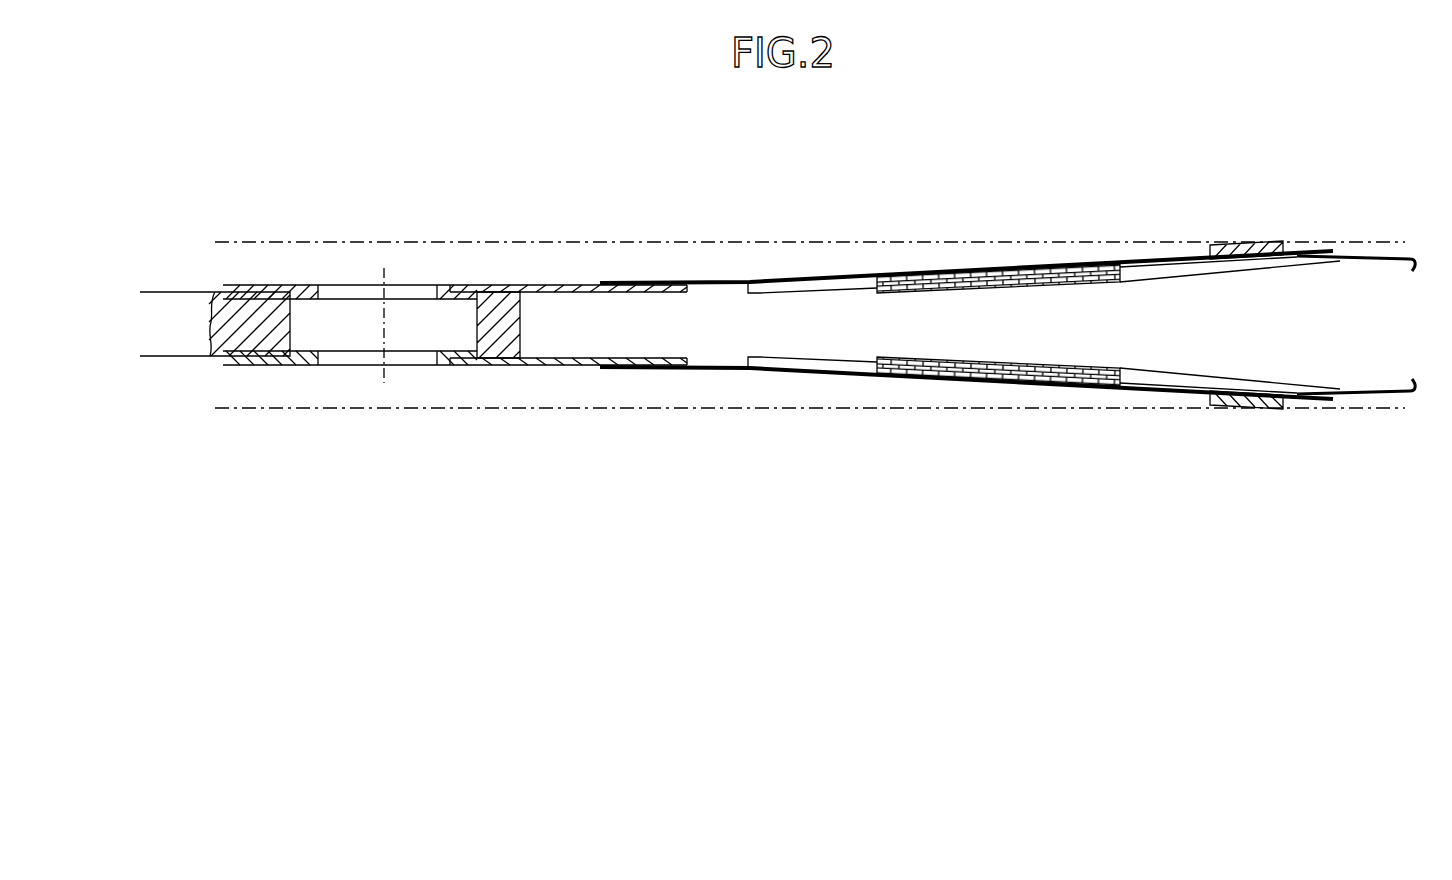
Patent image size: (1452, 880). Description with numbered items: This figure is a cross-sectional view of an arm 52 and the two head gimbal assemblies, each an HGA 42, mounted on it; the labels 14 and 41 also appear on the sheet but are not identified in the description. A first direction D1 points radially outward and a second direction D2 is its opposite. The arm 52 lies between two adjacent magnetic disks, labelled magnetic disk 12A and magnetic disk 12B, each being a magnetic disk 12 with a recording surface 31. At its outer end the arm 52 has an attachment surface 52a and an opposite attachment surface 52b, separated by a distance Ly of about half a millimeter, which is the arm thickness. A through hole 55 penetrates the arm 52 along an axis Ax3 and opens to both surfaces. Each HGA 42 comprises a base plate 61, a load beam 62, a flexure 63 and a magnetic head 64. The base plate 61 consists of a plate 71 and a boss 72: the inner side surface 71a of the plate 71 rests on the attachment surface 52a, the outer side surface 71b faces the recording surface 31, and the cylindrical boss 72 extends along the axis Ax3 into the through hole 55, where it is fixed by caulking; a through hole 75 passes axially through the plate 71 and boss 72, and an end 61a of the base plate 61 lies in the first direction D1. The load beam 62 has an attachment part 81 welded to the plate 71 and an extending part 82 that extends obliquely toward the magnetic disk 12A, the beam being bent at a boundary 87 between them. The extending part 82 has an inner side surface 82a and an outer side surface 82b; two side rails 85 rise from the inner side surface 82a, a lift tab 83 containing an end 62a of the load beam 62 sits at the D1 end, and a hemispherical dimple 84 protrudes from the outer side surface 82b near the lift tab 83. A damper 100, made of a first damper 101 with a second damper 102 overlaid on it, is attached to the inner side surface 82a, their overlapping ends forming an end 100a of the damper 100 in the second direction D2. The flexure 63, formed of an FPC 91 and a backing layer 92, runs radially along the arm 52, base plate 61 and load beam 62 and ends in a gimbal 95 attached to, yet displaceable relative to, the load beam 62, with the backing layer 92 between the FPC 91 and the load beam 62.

The treatment tool 14 is at (231, 144).
The proximal member 41 is at (247, 306).
The arm 52 is at (215, 264).
The attachment surface 52a is at (214, 295).
The attachment surface 52b is at (214, 355).
The through hole 55 is at (351, 316).
The outer side surface 71b is at (280, 284).
The through hole 75 is at (404, 285).
The boss 72 is at (462, 288).
The magnetic disk 12 is at (810, 326).
The magnetic disk 12A is at (487, 240).
The magnetic disk 12B is at (487, 410).
The recording surface 31 is at (810, 326).
The base plate 61 is at (455, 327).
The plate 71 is at (528, 284).
The attachment part 81 is at (622, 285).
The end of base plate 61a is at (706, 288).
The inner side surface 71a is at (712, 283).
The boundary 87 is at (758, 290).
The outer side surface 82b is at (780, 288).
The extending part 82 is at (812, 327).
The inner side surface 82a is at (837, 288).
The end of damper 100a is at (886, 292).
The first damper 101 is at (906, 270).
The damper 100 is at (998, 327).
The second damper 102 is at (1007, 292).
The backing layer 92 is at (1068, 265).
The FPC 91 is at (1131, 263).
The load beam 62 is at (1230, 327).
The side rails 85 is at (1172, 261).
The dimple 84 is at (1232, 245).
The magnetic head 64 is at (1252, 243).
The gimbal 95 is at (1279, 242).
The flexure 63 is at (1322, 250).
The end of load beam 62a is at (1412, 258).
The lift tab 83 is at (1347, 263).
The HGA 42 is at (1398, 265).
The distance Ly is at (156, 296).
The first direction D1 is at (320, 507).
The second direction D2 is at (258, 507).
The axis Ax3 is at (381, 240).